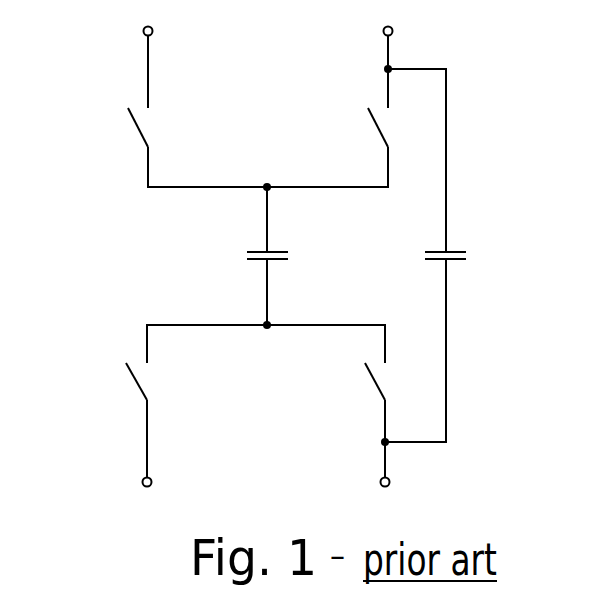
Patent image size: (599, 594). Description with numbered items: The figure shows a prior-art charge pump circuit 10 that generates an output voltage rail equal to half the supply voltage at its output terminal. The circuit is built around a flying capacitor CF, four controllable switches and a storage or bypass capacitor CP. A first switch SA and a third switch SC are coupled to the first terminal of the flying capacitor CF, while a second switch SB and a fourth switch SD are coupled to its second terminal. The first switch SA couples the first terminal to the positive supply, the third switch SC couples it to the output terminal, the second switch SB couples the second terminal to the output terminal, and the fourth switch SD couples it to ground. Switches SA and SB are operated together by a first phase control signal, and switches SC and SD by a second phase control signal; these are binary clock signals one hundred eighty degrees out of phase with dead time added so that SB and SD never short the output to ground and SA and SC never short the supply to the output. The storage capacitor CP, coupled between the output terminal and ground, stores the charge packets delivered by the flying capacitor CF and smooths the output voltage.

The charge pump circuit 10 is at (277, 294).
The first switch SA is at (156, 127).
The second switch SB is at (154, 381).
The third switch SC is at (395, 127).
The fourth switch SD is at (394, 381).
The flying capacitor CF is at (284, 255).
The storage capacitor CP is at (462, 255).